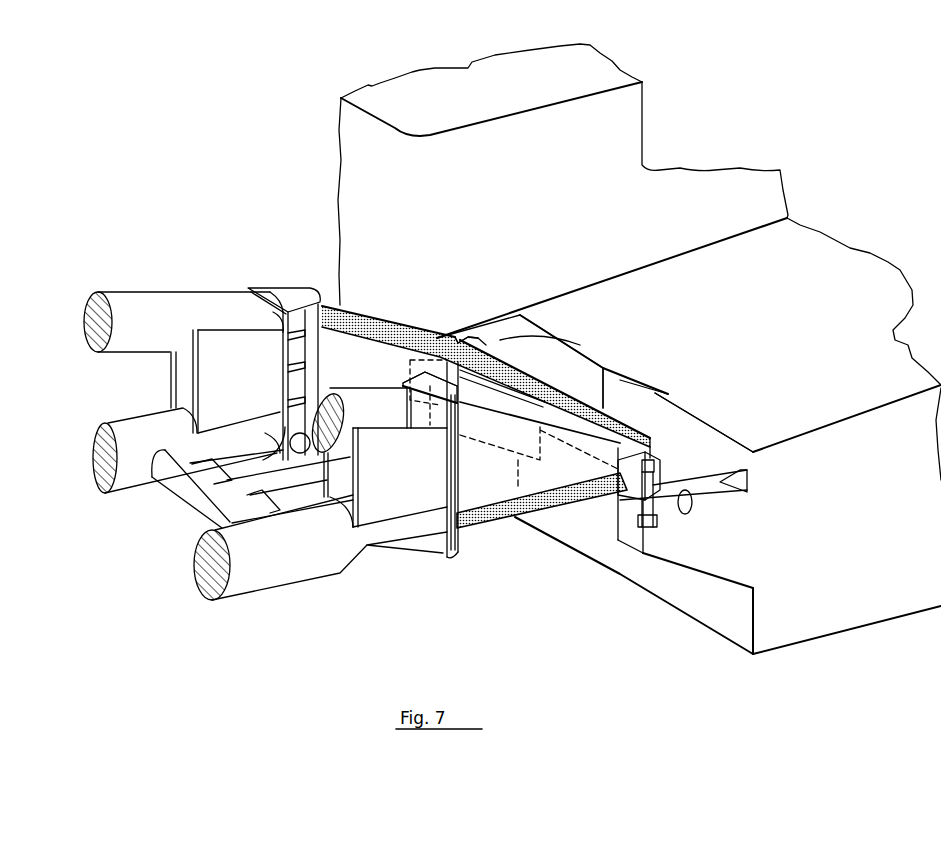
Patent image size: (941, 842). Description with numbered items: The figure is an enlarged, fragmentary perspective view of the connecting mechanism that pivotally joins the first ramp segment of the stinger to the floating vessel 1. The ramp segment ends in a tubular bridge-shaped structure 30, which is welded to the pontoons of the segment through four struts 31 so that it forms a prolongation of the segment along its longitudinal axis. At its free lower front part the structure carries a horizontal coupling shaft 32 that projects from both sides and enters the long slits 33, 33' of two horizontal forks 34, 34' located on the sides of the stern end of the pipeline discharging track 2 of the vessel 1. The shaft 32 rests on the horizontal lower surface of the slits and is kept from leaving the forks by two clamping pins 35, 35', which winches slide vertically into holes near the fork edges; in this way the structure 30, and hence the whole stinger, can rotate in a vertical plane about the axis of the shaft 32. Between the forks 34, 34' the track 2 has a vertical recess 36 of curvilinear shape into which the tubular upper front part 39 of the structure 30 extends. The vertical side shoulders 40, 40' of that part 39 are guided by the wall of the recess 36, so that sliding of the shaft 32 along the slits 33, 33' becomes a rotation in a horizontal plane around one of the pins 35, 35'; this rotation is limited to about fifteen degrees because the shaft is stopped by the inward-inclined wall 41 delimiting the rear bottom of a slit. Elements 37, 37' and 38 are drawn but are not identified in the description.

The vessel 1 is at (632, 117).
The pipeline discharging track 2 is at (860, 283).
The tubular bridge-shaped structure 30 is at (478, 556).
The struts 31 is at (158, 310).
The coupling shaft 32 is at (675, 500).
The slit 33 is at (695, 499).
The horizontal fork 34 is at (711, 422).
The clamping pin 35 is at (548, 531).
The vertical recess 36 is at (625, 400).
The plate wall 37 is at (598, 402).
The edge 38 is at (645, 388).
The tubular upper front part 39 is at (567, 390).
The vertical side shoulder 40 is at (658, 471).
The inclined wall 41 is at (748, 482).
The vertical side shoulder 40' is at (468, 318).
The horizontal fork 34' is at (480, 303).
The slit 33' is at (550, 331).
The upper plate wall 37' is at (578, 341).
The clamping pin 35' is at (417, 371).